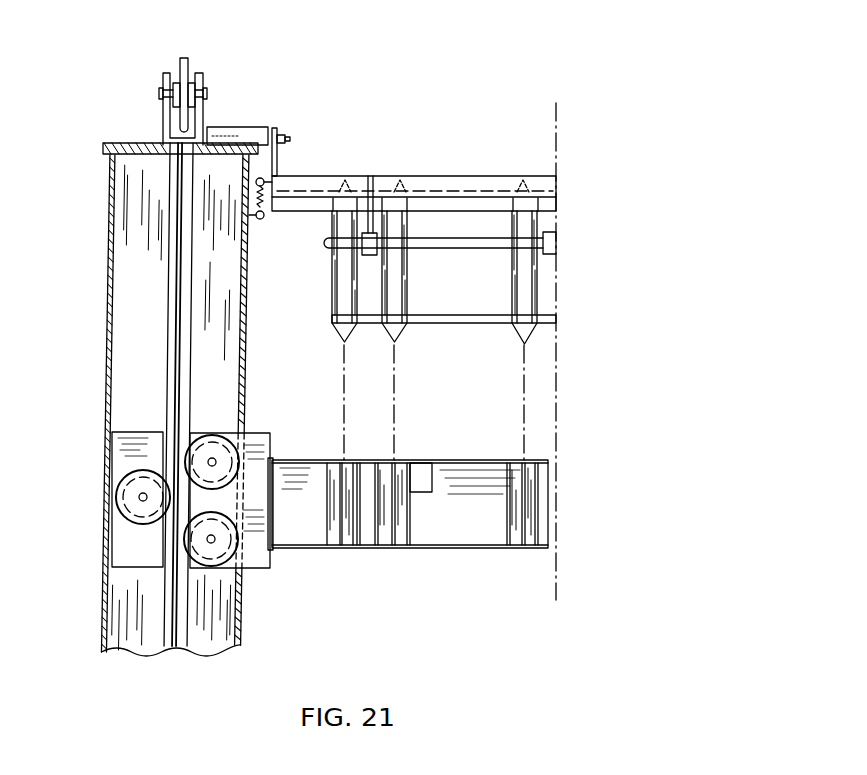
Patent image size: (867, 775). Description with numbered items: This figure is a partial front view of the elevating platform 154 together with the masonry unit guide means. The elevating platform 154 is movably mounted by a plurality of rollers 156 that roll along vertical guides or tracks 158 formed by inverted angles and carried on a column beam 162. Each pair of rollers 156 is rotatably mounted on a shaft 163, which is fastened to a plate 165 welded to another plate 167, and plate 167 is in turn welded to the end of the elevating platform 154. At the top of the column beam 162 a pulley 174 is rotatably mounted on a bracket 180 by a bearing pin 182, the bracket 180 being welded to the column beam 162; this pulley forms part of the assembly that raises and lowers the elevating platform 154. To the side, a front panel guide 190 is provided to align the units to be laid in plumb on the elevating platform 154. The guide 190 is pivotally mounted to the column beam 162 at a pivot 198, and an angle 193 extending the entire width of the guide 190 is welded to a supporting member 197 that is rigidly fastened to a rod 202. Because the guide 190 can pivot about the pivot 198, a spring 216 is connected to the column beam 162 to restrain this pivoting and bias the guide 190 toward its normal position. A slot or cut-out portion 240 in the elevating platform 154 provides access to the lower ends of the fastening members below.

The elevating platform 154 is at (286, 461).
The rollers 156 is at (214, 449).
The vertical guides or tracks 158 is at (188, 638).
The column beam 162 is at (160, 144).
The shaft 163 is at (139, 499).
The plate 165 is at (132, 543).
The plate 167 is at (275, 553).
The pulley 174 is at (186, 64).
The bracket 180 is at (203, 113).
The bearing pin 182 is at (159, 93).
The front panel guide 190 is at (408, 306).
The angle 193 is at (453, 189).
The supporting member 197 is at (370, 236).
The pivot 198 is at (291, 139).
The rod 202 is at (327, 243).
The spring 216 is at (264, 206).
The slot or cut-out portion 240 is at (422, 481).